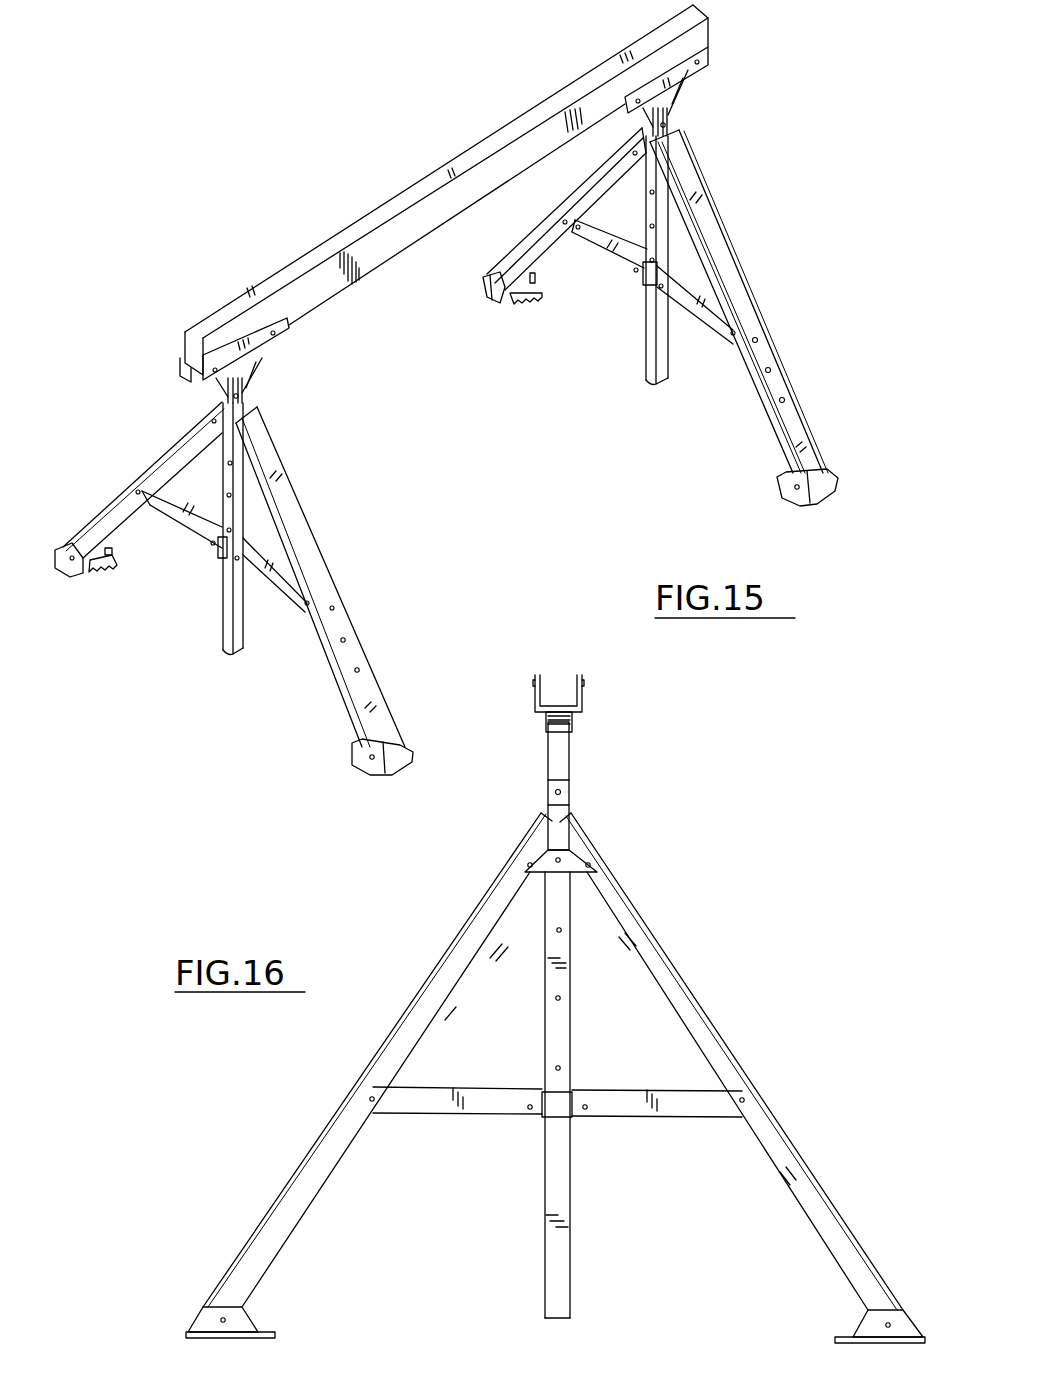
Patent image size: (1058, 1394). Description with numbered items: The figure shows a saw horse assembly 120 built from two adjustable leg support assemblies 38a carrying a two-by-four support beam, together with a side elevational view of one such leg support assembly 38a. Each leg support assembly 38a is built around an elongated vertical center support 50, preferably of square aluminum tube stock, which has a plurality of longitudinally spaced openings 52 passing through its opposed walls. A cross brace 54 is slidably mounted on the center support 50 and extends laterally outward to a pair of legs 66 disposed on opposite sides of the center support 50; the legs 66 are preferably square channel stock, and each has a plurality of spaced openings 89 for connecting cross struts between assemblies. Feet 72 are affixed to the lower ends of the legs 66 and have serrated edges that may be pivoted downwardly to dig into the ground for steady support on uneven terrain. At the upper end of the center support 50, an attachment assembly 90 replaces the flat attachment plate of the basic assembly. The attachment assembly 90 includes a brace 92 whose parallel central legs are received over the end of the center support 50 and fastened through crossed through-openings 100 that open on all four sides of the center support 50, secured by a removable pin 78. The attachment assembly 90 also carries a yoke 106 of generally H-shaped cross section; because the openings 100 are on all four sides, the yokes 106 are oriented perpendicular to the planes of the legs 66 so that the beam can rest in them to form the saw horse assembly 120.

In FIG. 15, the saw horse assembly 120 is at (508, 102).
In FIG. 15, the adjustable leg support assembly 38a is at (744, 251).
In FIG. 16, the adjustable leg support assembly 38a is at (684, 901).
In FIG. 15, the yoke 106 is at (708, 52).
In FIG. 16, the yoke 106 is at (535, 690).
In FIG. 15, the attachment assembly 90 is at (694, 94).
In FIG. 16, the attachment assembly 90 is at (589, 692).
In FIG. 15, the brace 92 is at (257, 360).
In FIG. 16, the brace 92 is at (572, 752).
In FIG. 15, the crossed through-openings 100 is at (668, 125).
In FIG. 15, the removable pin 78 is at (638, 132).
In FIG. 16, the removable pin 78 is at (562, 792).
In FIG. 15, the center support 50 is at (646, 330).
In FIG. 16, the center support 50 is at (567, 1185).
In FIG. 16, the openings 52 is at (558, 996).
In FIG. 15, the cross brace 54 is at (623, 263).
In FIG. 16, the cross brace 54 is at (487, 1105).
In FIG. 15, the legs 66 is at (757, 316).
In FIG. 16, the legs 66 is at (420, 1000).
In FIG. 15, the spaced openings 89 is at (345, 640).
In FIG. 15, the feet 72 is at (355, 765).
In FIG. 16, the feet 72 is at (245, 1322).